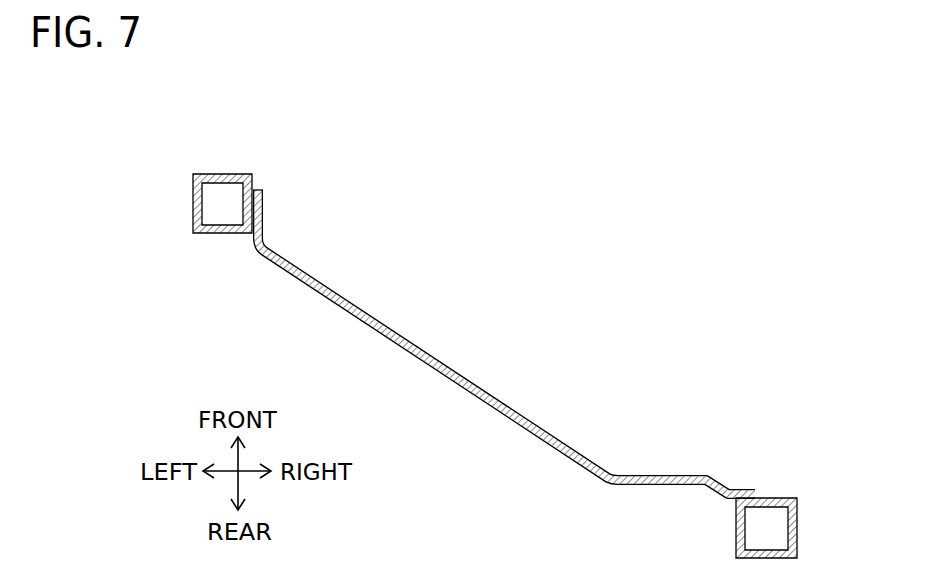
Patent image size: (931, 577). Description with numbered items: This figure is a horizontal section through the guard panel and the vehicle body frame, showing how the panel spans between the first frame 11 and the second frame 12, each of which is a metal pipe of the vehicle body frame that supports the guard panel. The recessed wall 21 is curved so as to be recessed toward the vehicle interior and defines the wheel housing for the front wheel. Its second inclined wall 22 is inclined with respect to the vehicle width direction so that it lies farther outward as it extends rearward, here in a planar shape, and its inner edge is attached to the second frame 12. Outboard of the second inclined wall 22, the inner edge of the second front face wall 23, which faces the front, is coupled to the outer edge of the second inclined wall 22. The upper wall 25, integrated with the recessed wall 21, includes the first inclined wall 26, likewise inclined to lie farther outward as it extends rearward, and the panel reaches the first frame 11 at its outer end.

The first frame 11 is at (797, 527).
The second frame 12 is at (220, 173).
The recessed wall 21 is at (408, 332).
The second inclined wall 22 is at (462, 370).
The second front face wall 23 is at (655, 475).
The upper wall 25 is at (719, 478).
The first inclined wall 26 is at (734, 480).